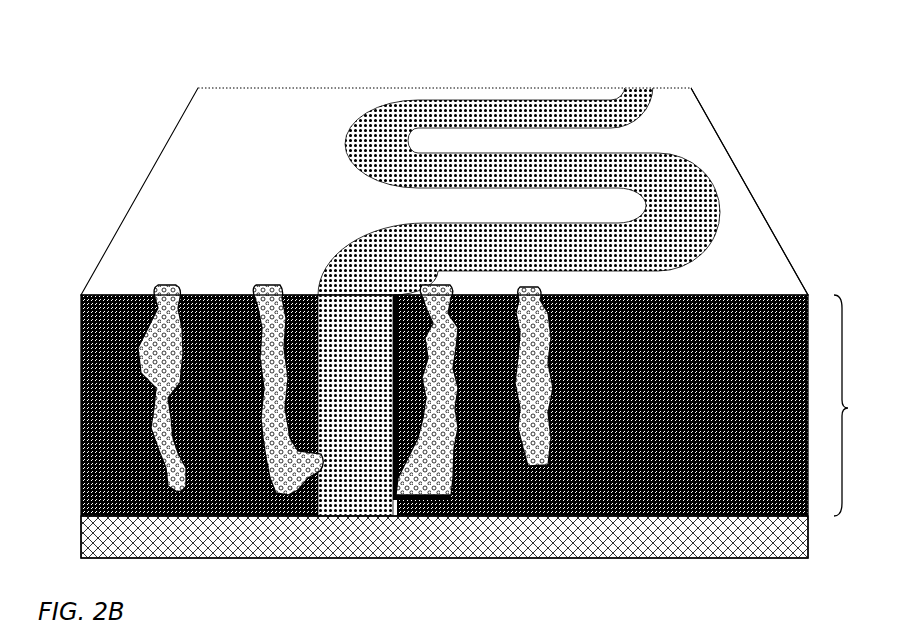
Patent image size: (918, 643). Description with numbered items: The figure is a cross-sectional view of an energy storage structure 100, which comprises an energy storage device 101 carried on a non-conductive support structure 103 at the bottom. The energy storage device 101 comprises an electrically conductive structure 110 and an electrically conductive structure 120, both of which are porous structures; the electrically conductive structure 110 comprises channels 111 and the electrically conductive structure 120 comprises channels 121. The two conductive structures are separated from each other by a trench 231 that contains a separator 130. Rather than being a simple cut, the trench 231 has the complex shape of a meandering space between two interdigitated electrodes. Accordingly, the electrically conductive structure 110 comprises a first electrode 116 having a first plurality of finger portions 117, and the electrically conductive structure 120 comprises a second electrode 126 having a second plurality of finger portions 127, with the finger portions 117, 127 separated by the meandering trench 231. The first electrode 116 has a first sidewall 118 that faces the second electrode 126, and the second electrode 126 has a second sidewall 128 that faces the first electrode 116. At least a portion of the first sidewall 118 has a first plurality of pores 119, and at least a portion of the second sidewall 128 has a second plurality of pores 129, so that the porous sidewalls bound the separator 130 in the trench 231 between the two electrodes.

The energy storage structure 100 is at (803, 285).
The energy storage device 101 is at (484, 405).
The non-conductive support structure 103 is at (565, 527).
The electrically conductive structure 110 is at (199, 405).
The channels 111 is at (253, 420).
The first electrode 116 is at (297, 100).
The first plurality of finger portions 117 is at (507, 200).
The first sidewall 118 is at (310, 360).
The first plurality of pores 119 is at (308, 455).
The electrically conductive structure 120 is at (602, 405).
The channels 121 is at (447, 425).
The second electrode 126 is at (676, 100).
The second plurality of finger portions 127 is at (535, 132).
The second sidewall 128 is at (385, 367).
The second plurality of pores 129 is at (383, 472).
The separator 130 is at (350, 307).
The trench 231 is at (353, 515).